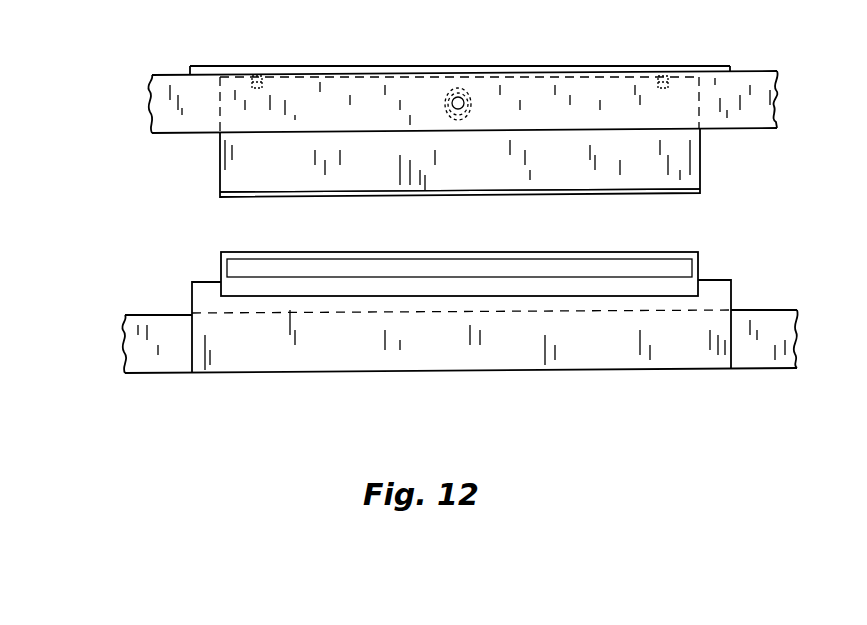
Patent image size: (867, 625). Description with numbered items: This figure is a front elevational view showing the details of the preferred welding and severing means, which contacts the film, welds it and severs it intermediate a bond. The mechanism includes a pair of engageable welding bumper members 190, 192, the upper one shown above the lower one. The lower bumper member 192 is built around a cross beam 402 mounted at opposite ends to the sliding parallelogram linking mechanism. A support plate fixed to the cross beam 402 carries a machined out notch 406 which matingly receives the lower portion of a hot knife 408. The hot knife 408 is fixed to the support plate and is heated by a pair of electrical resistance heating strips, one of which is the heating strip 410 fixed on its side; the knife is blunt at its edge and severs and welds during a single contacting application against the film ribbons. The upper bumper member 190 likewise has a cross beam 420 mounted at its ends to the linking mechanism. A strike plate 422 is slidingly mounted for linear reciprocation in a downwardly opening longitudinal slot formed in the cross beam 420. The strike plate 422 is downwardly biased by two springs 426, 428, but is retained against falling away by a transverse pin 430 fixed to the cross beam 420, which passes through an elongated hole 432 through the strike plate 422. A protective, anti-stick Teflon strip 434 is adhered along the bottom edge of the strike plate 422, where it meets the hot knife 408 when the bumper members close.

The upper welding bumper member 190 is at (200, 166).
The lower welding bumper member 192 is at (158, 290).
The cross beam 402 is at (770, 318).
The machined out notch 406 is at (680, 292).
The hot knife 408 is at (655, 285).
The electrical resistance heating strip 410 is at (548, 240).
The cross beam 420 is at (748, 108).
The strike plate 422 is at (678, 162).
The spring 426 is at (256, 75).
The spring 428 is at (663, 74).
The transverse pin 430 is at (466, 96).
The elongated hole 432 is at (457, 90).
The Teflon strip 434 is at (438, 196).